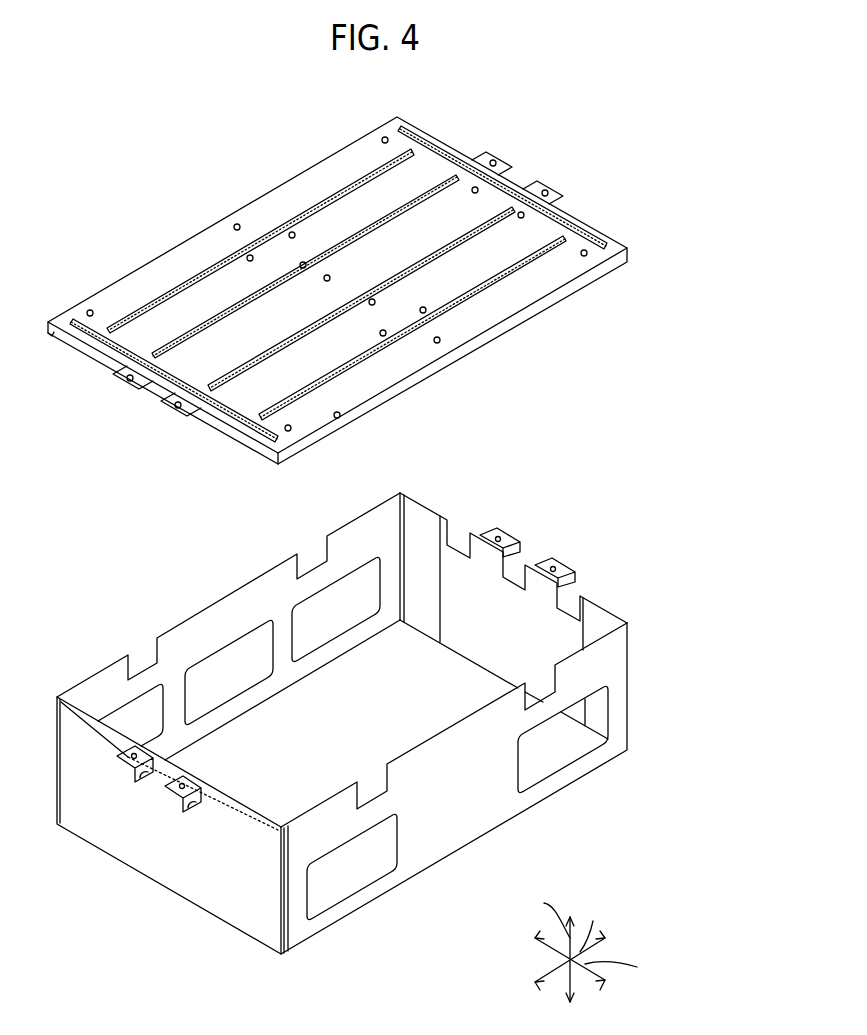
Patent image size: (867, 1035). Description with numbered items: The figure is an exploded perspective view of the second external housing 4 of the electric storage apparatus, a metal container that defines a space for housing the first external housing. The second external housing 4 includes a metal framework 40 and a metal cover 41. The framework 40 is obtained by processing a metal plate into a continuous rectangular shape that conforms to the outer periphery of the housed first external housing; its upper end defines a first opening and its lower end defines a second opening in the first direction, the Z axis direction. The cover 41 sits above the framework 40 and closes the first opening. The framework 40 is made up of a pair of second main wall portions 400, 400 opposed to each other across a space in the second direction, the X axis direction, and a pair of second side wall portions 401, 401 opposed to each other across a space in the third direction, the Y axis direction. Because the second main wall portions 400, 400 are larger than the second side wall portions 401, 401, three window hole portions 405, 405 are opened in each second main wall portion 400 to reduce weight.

The second external housing 4 is at (733, 362).
The framework 40 is at (630, 608).
The cover 41 is at (588, 305).
The second main wall portion 400 is at (248, 582).
The second side wall portion 401 is at (433, 512).
The window hole portion 405 is at (230, 695).